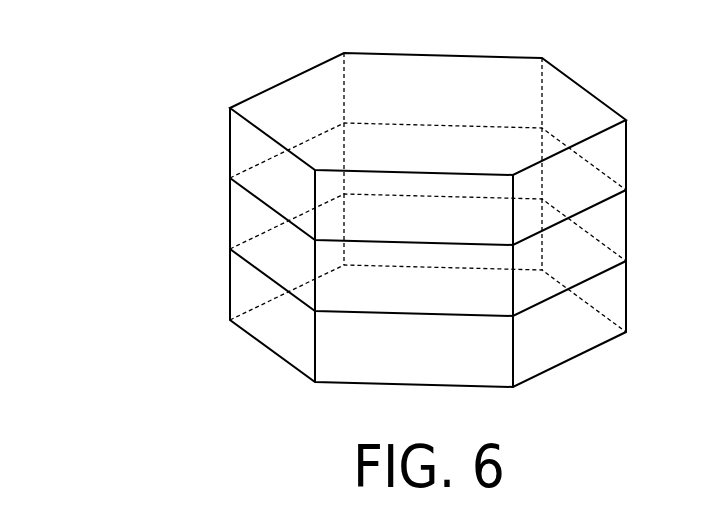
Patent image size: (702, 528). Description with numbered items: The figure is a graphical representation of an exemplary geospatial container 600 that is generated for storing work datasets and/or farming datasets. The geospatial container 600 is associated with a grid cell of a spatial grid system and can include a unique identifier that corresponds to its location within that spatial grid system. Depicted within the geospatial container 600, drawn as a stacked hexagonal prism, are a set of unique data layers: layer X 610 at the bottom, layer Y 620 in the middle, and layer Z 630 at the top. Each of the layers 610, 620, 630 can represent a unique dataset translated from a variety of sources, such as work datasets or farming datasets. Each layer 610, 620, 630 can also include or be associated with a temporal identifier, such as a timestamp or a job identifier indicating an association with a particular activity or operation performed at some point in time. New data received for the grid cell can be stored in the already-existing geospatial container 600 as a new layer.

The geospatial container 600 is at (100, 87).
The layer X 610 is at (356, 356).
The layer Y 620 is at (356, 286).
The layer Z 630 is at (356, 215).